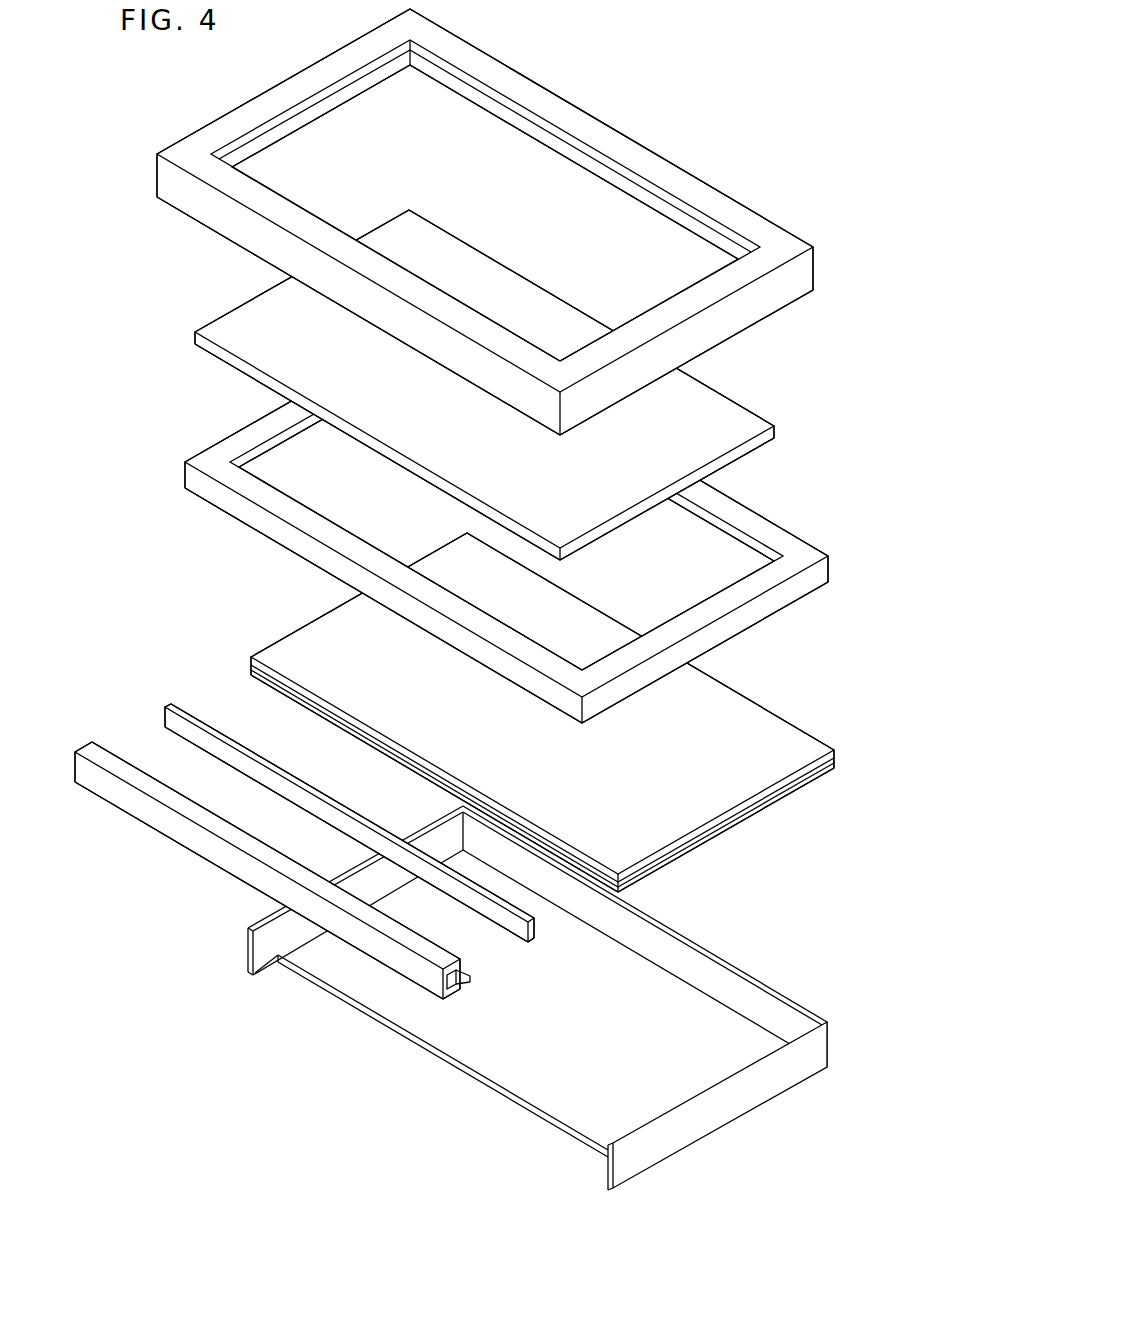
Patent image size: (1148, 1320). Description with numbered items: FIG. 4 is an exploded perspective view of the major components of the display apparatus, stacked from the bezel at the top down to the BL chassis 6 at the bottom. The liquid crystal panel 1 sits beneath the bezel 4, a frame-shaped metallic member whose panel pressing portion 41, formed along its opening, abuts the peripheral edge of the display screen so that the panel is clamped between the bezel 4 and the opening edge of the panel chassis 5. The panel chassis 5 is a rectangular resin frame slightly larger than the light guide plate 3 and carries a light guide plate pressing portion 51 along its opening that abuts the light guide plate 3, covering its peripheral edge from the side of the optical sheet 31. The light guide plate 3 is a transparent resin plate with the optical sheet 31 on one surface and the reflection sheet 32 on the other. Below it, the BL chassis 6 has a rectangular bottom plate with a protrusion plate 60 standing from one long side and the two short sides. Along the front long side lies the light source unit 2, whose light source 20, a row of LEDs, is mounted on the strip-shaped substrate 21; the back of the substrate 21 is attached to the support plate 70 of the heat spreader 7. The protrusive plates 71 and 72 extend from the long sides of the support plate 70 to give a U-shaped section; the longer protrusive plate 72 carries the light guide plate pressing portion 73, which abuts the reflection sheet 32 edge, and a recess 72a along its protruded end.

The liquid crystal panel 1 is at (740, 415).
The light source unit 2 is at (193, 688).
The light source 20 is at (537, 930).
The substrate 21 is at (519, 932).
The light guide plate 3 is at (725, 825).
The optical sheet 31 is at (780, 740).
The reflection sheet 32 is at (770, 815).
The bezel 4 is at (155, 160).
The panel pressing portion 41 is at (580, 148).
The panel chassis 5 is at (232, 428).
The light guide plate pressing portion 51 is at (683, 503).
The BL chassis 6 is at (765, 1110).
The protrusion plate 60 is at (835, 1025).
The heat spreader 7 is at (178, 852).
The support plate 70 is at (108, 790).
The protrusive plate 71 is at (120, 745).
The protrusive plate 72 is at (449, 998).
The light guide plate pressing portion 73 is at (461, 990).
The recess 72a is at (473, 985).